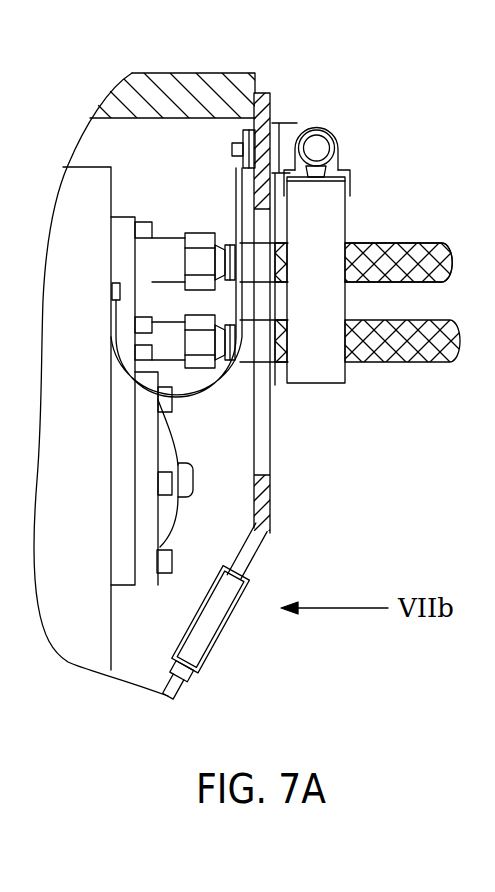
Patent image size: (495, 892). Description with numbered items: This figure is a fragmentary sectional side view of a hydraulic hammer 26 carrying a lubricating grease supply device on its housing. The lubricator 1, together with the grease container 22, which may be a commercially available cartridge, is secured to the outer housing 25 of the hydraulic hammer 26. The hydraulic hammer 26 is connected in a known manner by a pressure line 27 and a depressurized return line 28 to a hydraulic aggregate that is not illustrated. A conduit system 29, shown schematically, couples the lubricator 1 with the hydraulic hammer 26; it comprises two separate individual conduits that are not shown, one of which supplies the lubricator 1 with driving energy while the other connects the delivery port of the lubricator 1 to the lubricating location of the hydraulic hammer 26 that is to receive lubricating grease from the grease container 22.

The lubricator 1 is at (335, 130).
The grease container 22 is at (324, 386).
The outer housing 25 is at (262, 530).
The hydraulic hammer 26 is at (76, 546).
The pressure line 27 is at (405, 246).
The depressurized return line 28 is at (405, 358).
The conduit system 29 is at (232, 152).